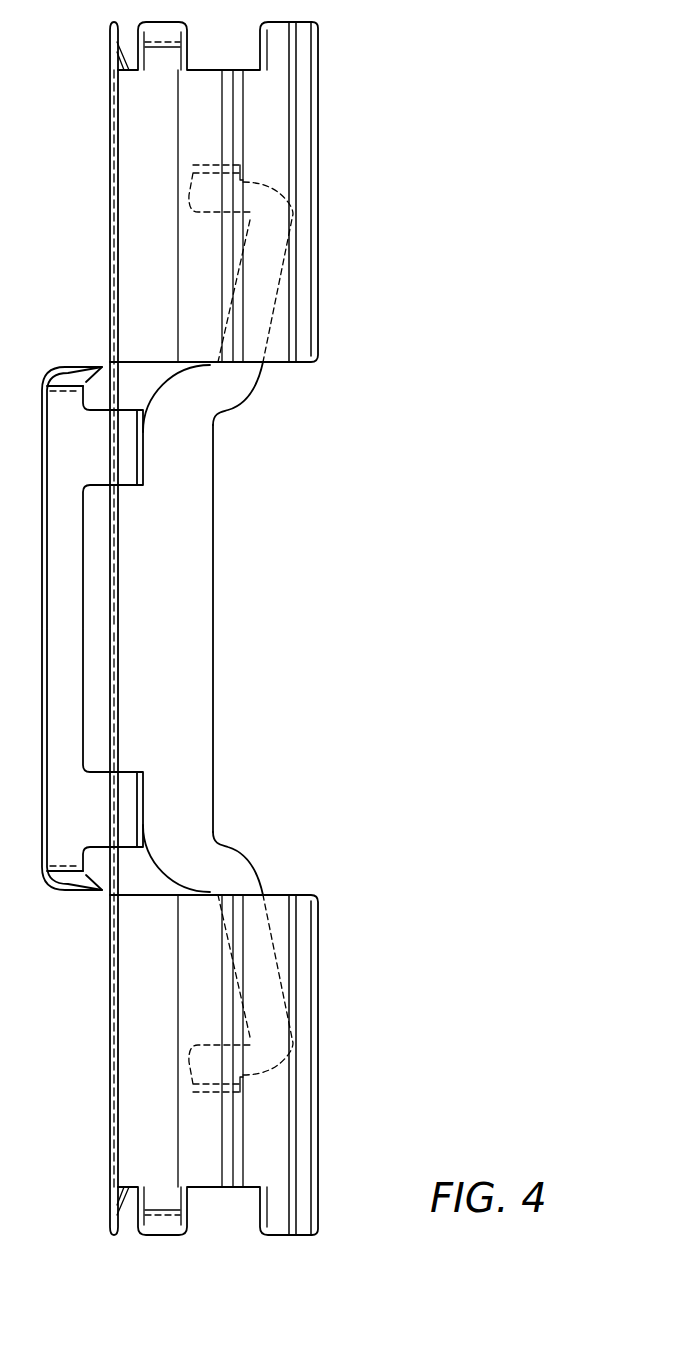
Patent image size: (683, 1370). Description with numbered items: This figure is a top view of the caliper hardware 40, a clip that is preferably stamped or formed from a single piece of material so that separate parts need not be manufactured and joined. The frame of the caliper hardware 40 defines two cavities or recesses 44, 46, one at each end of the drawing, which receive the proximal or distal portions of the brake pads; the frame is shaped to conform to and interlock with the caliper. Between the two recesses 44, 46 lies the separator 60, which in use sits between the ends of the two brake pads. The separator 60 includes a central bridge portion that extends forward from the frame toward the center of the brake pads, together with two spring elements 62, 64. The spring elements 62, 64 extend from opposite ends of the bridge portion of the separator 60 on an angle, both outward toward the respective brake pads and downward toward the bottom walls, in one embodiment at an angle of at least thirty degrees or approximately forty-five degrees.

The caliper hardware 40 is at (333, 161).
The recess 44 is at (308, 1142).
The recess 46 is at (303, 180).
The separator 60 is at (178, 645).
The spring element 62 is at (233, 865).
The spring element 64 is at (252, 373).